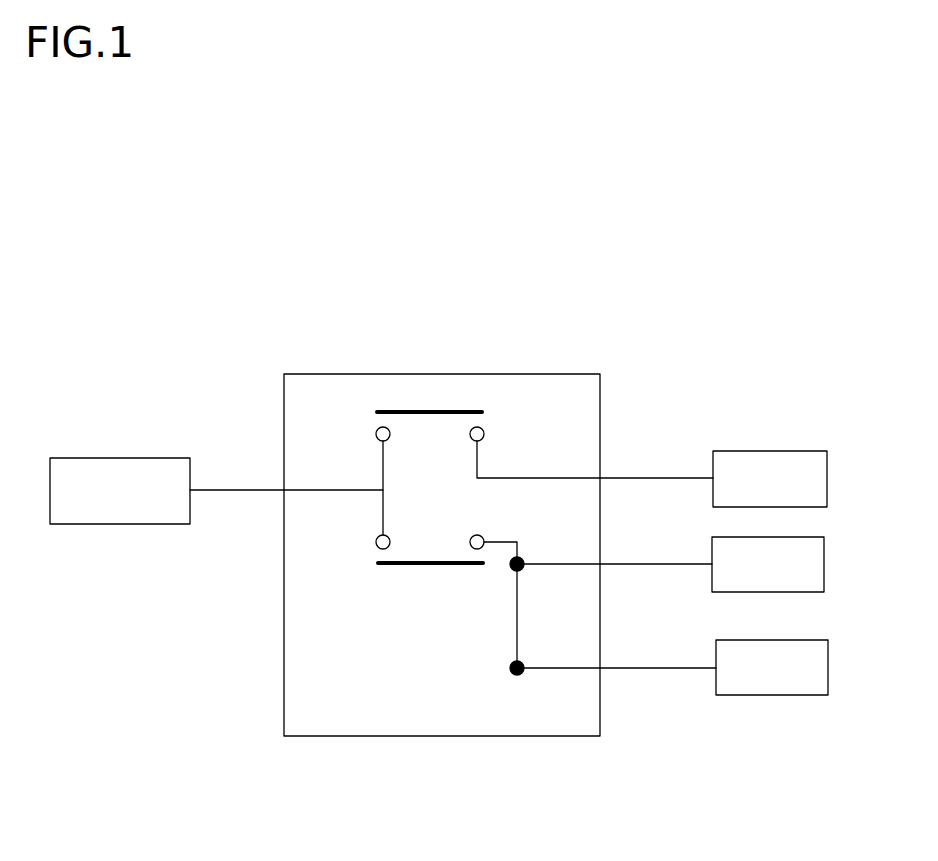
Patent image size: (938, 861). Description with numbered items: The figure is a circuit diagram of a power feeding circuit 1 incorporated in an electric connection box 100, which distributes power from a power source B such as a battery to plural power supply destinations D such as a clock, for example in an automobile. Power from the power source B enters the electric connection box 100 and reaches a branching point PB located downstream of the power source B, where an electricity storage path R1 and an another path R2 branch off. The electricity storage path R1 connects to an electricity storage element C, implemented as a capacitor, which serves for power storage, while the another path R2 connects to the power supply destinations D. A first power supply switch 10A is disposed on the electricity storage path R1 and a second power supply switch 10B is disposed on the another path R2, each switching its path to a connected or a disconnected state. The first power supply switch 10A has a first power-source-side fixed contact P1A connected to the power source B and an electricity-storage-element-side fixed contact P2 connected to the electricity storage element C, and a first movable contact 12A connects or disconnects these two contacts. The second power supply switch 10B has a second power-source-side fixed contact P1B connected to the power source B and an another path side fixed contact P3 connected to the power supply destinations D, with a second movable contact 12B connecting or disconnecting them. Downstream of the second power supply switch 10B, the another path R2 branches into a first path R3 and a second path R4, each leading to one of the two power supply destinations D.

The power feeding circuit 1 is at (436, 240).
The electric connection box 100 is at (325, 368).
The first power supply switch 10A is at (450, 388).
The second power supply switch 10B is at (417, 573).
The first movable contact 12A is at (428, 410).
The second movable contact 12B is at (438, 567).
The first power-source-side fixed contact P1A is at (377, 429).
The second power-source-side fixed contact P1B is at (377, 548).
The electricity-storage-element-side fixed contact P2 is at (485, 431).
The another path side fixed contact P3 is at (477, 535).
The branching point PB is at (378, 485).
The electricity storage path R1 is at (562, 462).
The another path R2 is at (500, 530).
The first path R3 is at (608, 570).
The second path R4 is at (618, 682).
The power source B is at (117, 458).
The electricity storage element C is at (732, 451).
The power supply destinations D is at (762, 537).